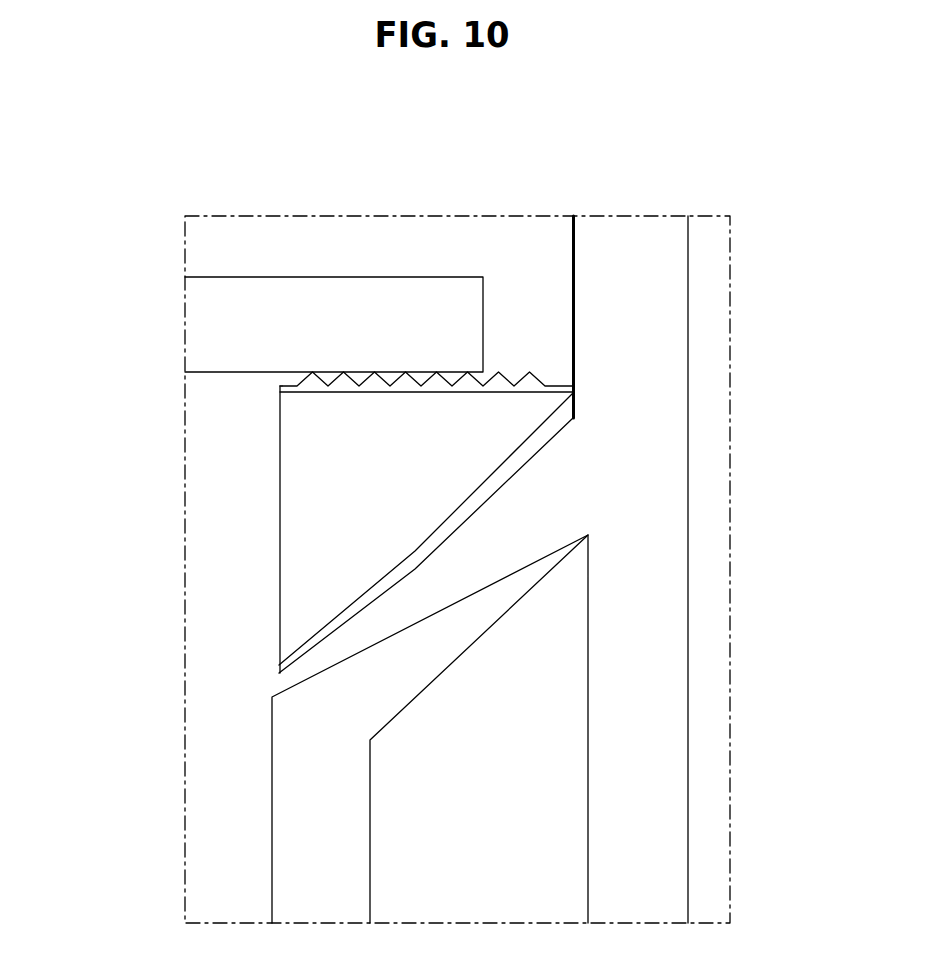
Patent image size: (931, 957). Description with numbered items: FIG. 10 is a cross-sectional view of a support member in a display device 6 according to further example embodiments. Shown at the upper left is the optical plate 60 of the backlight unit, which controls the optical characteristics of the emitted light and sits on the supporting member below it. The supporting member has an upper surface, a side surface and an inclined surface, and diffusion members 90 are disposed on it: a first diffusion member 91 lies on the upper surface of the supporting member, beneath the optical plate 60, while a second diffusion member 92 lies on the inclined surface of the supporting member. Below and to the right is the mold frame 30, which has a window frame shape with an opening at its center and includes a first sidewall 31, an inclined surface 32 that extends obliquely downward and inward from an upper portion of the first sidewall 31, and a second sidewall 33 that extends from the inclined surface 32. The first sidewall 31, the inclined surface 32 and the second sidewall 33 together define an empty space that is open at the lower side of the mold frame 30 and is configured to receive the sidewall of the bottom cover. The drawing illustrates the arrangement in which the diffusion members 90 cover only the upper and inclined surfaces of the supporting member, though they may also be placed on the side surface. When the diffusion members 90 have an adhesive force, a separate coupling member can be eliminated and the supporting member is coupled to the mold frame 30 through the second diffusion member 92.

The display device 6 is at (219, 156).
The optical plate 60 is at (208, 350).
The diffusion members 90 is at (446, 267).
The first diffusion member 91 is at (502, 380).
The second diffusion member 92 is at (550, 435).
The mold frame 30 is at (556, 569).
The first sidewall 31 is at (657, 648).
The inclined surface 32 is at (470, 572).
The second sidewall 33 is at (352, 778).